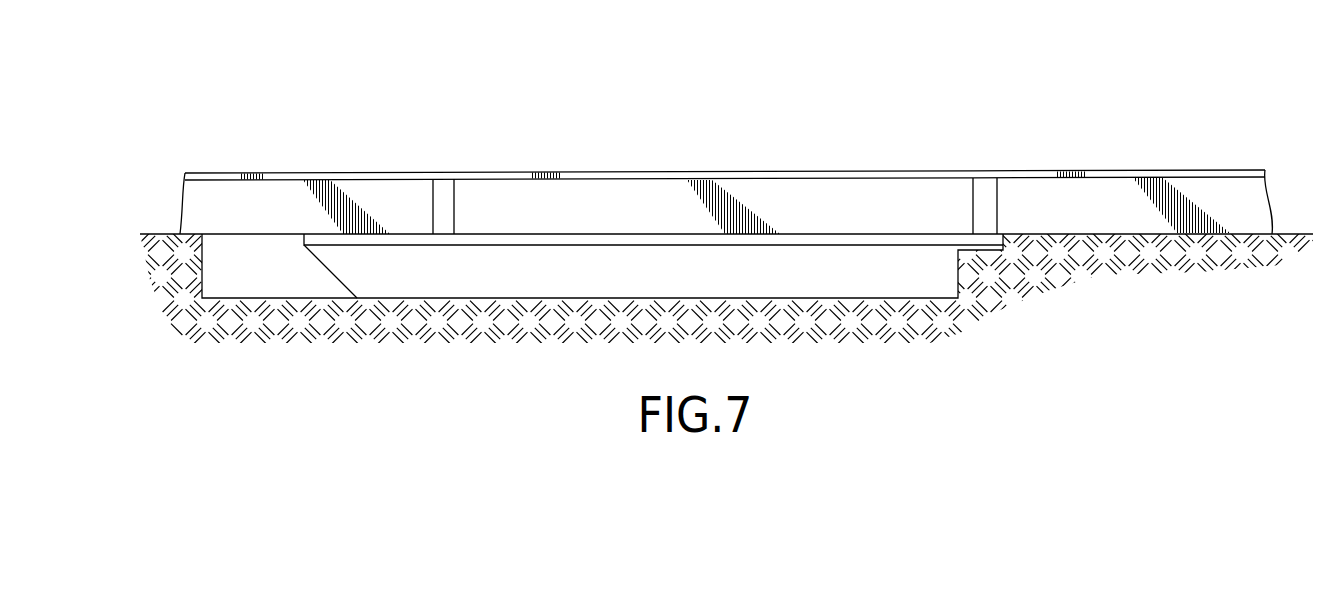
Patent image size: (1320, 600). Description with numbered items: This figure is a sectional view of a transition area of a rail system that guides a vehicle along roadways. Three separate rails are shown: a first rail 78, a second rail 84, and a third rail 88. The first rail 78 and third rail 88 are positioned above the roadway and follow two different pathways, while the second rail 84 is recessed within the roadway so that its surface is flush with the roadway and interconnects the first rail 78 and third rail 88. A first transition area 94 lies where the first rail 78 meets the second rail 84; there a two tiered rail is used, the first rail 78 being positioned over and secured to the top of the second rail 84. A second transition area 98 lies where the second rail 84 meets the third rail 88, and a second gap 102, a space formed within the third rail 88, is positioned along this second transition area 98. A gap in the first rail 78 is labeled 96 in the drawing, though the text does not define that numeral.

The first rail 78 is at (500, 178).
The second rail 84 is at (670, 131).
The third rail 88 is at (1128, 195).
The first transition area 94 is at (301, 118).
The joint 96 is at (447, 190).
The second transition area 98 is at (913, 98).
The second gap 102 is at (986, 190).